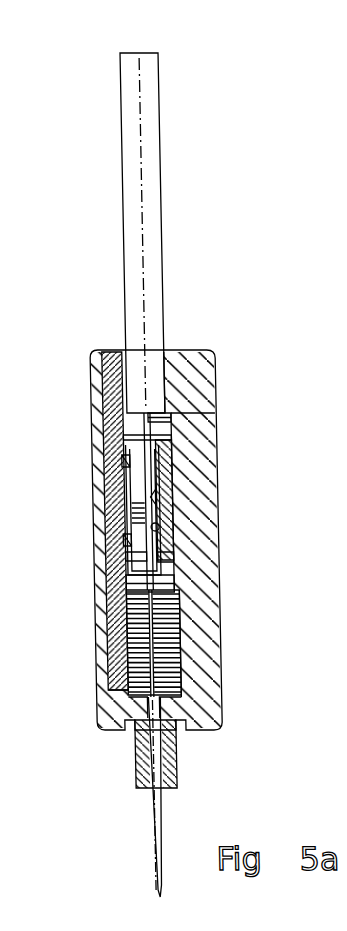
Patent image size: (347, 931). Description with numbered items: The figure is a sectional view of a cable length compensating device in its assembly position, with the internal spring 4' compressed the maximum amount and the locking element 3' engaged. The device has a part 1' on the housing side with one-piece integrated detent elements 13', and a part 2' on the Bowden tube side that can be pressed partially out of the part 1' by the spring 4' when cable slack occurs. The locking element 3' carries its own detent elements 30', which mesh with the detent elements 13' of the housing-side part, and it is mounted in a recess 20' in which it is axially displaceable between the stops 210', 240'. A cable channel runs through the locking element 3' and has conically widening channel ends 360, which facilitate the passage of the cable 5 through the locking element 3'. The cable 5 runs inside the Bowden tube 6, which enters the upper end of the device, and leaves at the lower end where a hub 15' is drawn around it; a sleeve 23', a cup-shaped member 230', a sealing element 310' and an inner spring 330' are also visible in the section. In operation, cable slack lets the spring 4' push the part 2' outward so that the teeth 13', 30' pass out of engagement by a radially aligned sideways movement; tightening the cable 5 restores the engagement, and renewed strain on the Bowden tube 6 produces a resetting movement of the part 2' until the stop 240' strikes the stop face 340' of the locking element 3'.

The part on the housing side 1' is at (190, 540).
The part on the Bowden tube side 2' is at (110, 580).
The locking element 3' is at (214, 494).
The spring 4' is at (207, 642).
The cable 5 is at (146, 815).
The Bowden tube 6 is at (129, 221).
The detent elements 13' is at (227, 382).
The needle hub 15' is at (193, 754).
The recess 20' is at (96, 553).
The sleeve 23' is at (104, 486).
The detent elements 30' is at (223, 500).
The stop 210' is at (229, 553).
The cup-shaped member 230' is at (96, 510).
The stop 240' is at (225, 410).
The sealing element 310' is at (226, 523).
The inner spring 330' is at (89, 510).
The stop face 340' is at (212, 432).
The conically widening channel ends 360 is at (99, 462).